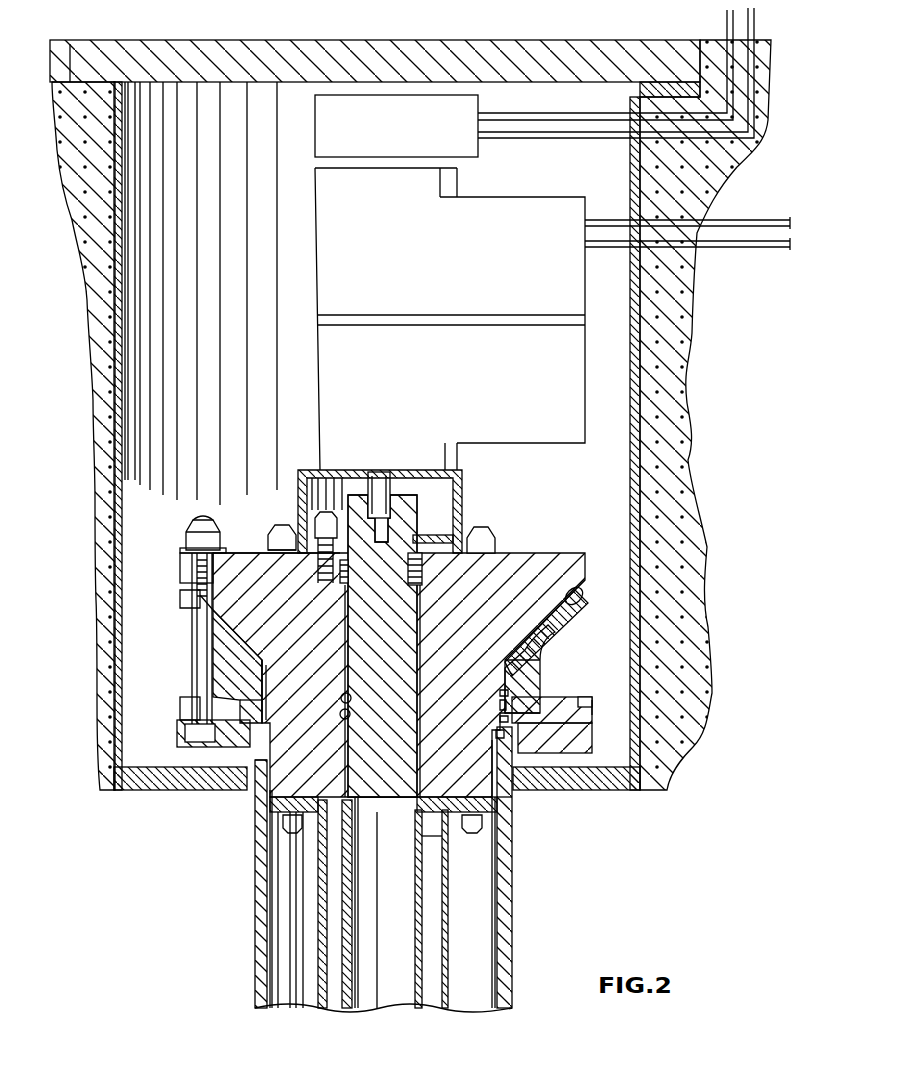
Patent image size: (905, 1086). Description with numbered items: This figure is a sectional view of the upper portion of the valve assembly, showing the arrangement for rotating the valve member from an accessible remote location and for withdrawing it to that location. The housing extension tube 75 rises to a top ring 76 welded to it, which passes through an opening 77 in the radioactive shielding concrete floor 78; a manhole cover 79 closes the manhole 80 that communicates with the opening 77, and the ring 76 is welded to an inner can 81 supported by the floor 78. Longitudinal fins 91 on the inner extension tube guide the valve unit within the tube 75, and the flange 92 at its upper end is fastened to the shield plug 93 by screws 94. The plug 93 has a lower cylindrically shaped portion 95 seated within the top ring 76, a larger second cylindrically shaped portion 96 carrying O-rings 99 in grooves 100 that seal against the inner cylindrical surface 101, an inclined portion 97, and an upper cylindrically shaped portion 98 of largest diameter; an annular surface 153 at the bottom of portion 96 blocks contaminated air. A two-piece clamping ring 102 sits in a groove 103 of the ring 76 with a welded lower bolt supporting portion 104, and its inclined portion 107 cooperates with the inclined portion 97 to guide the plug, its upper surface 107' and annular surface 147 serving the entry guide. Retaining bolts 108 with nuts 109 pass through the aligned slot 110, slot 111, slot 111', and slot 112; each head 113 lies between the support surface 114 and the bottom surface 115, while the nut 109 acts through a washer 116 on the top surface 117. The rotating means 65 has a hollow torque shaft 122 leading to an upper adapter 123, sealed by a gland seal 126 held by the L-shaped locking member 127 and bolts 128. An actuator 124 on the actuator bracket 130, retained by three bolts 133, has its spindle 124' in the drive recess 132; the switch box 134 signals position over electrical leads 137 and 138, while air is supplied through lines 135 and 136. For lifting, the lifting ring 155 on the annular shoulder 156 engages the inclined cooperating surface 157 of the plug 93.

The rotating means 65 is at (328, 905).
The extension tube 75 is at (512, 900).
The top ring 76 is at (520, 797).
The opening 77 is at (510, 787).
The concrete floor 78 is at (652, 795).
The manhole cover 79 is at (645, 50).
The manhole 80 is at (645, 205).
The inner can 81 is at (630, 465).
The longitudinal fins 91 is at (480, 852).
The flange 92 is at (485, 822).
The shield plug 93 is at (325, 838).
The screws 94 is at (270, 835).
The lower cylindrically shaped portion 95 is at (258, 790).
The second cylindrically shaped portion 96 is at (525, 700).
The inclined portion 97 is at (550, 625).
The upper cylindrically shaped portion 98 is at (583, 553).
The O-rings 99 is at (520, 680).
The grooves 100 is at (500, 690).
The inner cylindrical surface 101 is at (494, 745).
The clamping ring 102 is at (606, 716).
The groove 103 is at (525, 735).
The lower bolt supporting portion 104 is at (595, 750).
The inclined portion 107 is at (593, 591).
The upper surface 107' is at (196, 683).
The retaining bolts 108 is at (197, 648).
The nuts 109 is at (195, 522).
The slot 110 is at (180, 566).
The slot 111 is at (195, 656).
The slot 111' is at (163, 709).
The slot 112 is at (177, 728).
The head 113 is at (205, 737).
The support surface 114 is at (215, 770).
The bottom surface 115 is at (250, 740).
The washer 116 is at (185, 550).
The top surface 117 is at (257, 553).
The hollow torque shaft 122 is at (325, 868).
The upper adapter 123 is at (390, 800).
The actuator 124 is at (450, 319).
The spindle 124' is at (476, 459).
The gland seal 126 is at (422, 572).
The L-shaped locking member 127 is at (320, 522).
The bolts 128 is at (323, 505).
The actuator bracket 130 is at (305, 478).
The drive recess 132 is at (380, 480).
The bolts 133 is at (270, 528).
The switch box 134 is at (480, 100).
The hose or line 135 is at (748, 220).
The hose or line 136 is at (752, 247).
The electrical lead 137 is at (555, 113).
The electrical lead 138 is at (580, 140).
The annular surface 147 is at (590, 700).
The annular surface 153 is at (498, 735).
The lifting ring 155 is at (500, 703).
The annular shoulder 156 is at (340, 720).
The inclined cooperating surface 157 is at (346, 703).